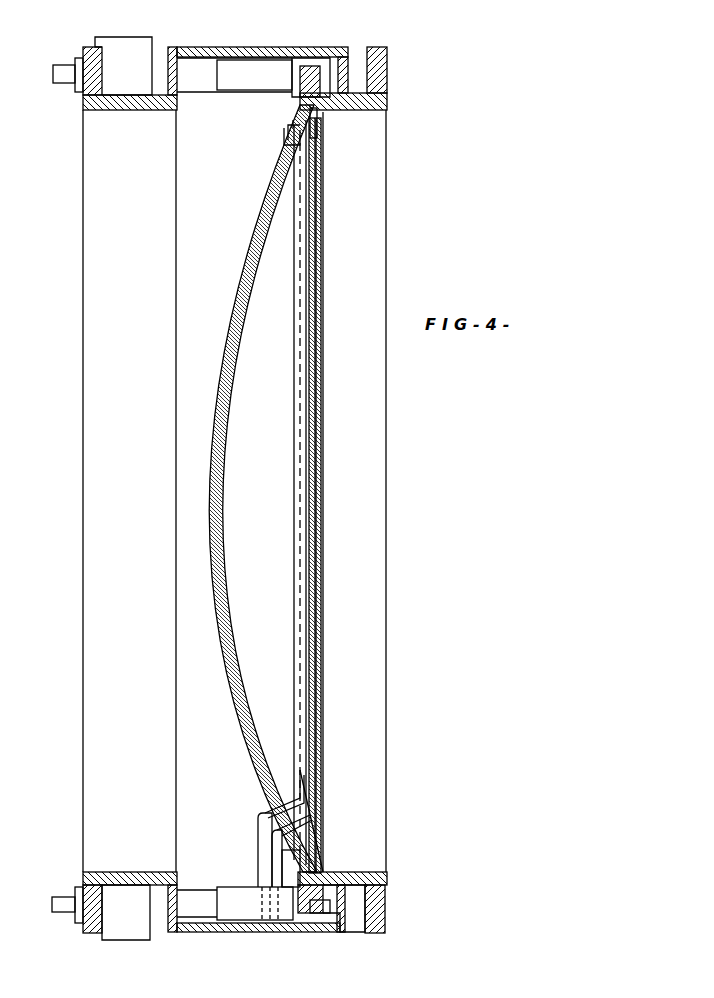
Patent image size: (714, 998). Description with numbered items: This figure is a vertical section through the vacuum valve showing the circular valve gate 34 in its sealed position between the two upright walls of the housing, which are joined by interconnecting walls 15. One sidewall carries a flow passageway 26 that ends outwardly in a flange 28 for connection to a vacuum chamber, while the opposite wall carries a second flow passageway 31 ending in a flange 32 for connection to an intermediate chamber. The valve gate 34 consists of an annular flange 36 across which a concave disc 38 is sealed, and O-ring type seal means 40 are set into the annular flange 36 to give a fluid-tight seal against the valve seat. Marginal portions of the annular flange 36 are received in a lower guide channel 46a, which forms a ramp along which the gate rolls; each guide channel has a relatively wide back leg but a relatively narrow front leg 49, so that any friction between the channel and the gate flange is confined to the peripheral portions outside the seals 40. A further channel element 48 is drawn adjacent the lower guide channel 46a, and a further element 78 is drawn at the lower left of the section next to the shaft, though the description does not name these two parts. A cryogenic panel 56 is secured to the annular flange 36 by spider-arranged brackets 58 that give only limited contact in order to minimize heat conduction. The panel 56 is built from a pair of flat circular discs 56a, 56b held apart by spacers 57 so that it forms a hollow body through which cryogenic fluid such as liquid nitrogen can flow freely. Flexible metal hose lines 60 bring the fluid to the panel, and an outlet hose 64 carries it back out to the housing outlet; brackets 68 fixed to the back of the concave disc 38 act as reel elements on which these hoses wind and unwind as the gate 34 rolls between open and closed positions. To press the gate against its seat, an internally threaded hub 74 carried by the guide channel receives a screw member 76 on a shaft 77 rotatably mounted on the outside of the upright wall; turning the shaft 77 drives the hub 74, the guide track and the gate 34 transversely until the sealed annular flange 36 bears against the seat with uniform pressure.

The interconnecting walls 15 is at (215, 925).
The flow passageway 26 is at (368, 872).
The flange 28 is at (387, 910).
The flow passageway 31 is at (103, 876).
The flange 32 is at (83, 876).
The valve gate 34 is at (362, 558).
The annular flange 36 is at (320, 105).
The concave disc 38 is at (252, 238).
The seal means 40 is at (322, 872).
The lower guide channel 46a is at (332, 908).
The lower hatched block 48 is at (298, 905).
The front leg 49 is at (347, 915).
The cryogenic panel 56 is at (348, 458).
The flat circular disc 56a is at (318, 378).
The flat circular disc 56b is at (305, 374).
The spacers 57 is at (321, 398).
The brackets 58 is at (318, 130).
The hose lines 60 is at (276, 860).
The outlet hose 64 is at (260, 822).
The brackets 68 is at (272, 850).
The internally threaded hub 74 is at (232, 922).
The screw member 76 is at (200, 928).
The shaft 77 is at (62, 915).
The cylinder head block 78 is at (122, 935).